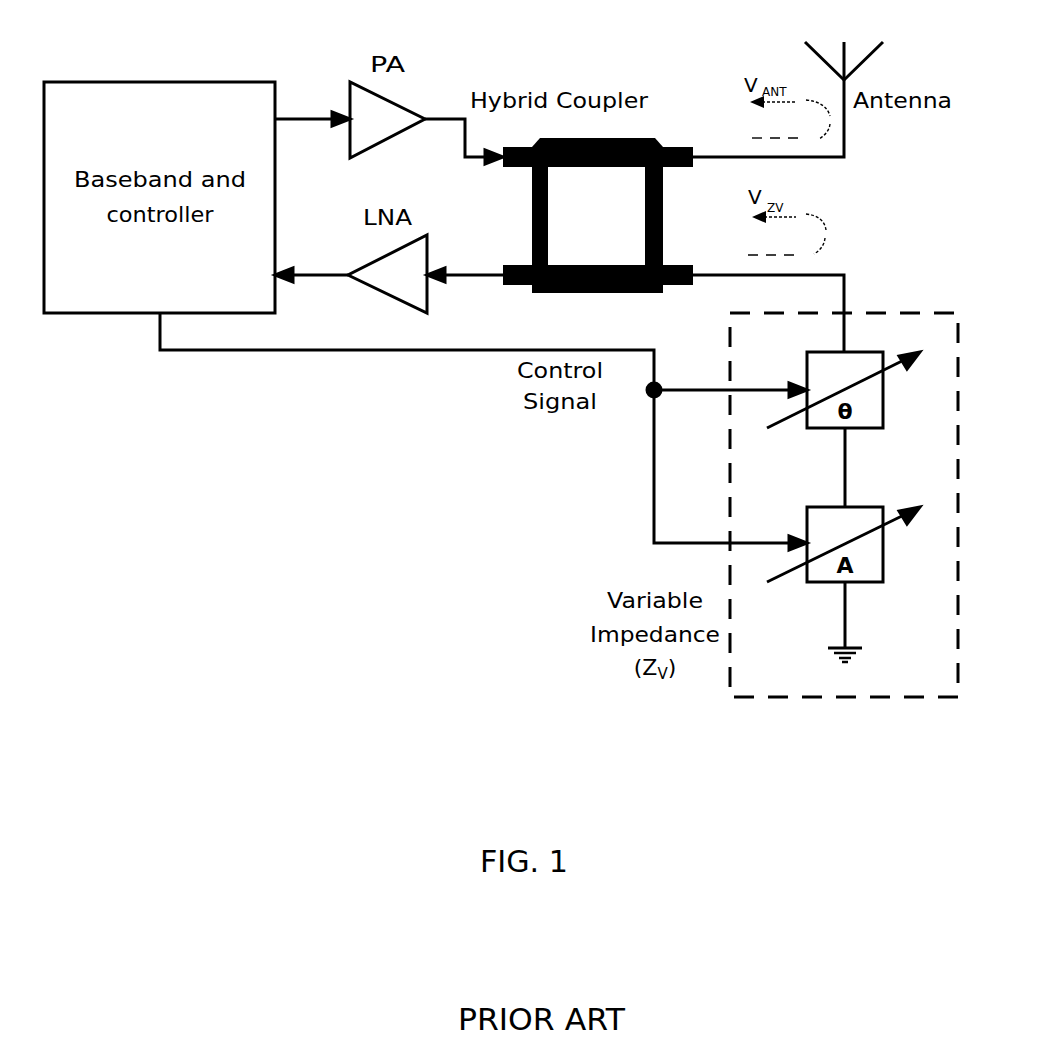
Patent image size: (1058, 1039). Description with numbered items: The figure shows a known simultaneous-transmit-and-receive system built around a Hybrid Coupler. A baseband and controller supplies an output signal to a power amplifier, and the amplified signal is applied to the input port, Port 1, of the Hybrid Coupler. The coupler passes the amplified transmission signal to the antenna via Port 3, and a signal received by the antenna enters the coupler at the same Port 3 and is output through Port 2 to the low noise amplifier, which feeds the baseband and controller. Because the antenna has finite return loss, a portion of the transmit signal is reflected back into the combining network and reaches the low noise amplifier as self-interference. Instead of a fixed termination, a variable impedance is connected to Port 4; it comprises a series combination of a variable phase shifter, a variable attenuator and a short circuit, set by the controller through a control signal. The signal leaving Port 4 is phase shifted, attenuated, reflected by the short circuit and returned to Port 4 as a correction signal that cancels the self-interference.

The input port 1 is at (490, 179).
The port 2 is at (492, 296).
The port 3 is at (709, 137).
The port 4 is at (699, 296).